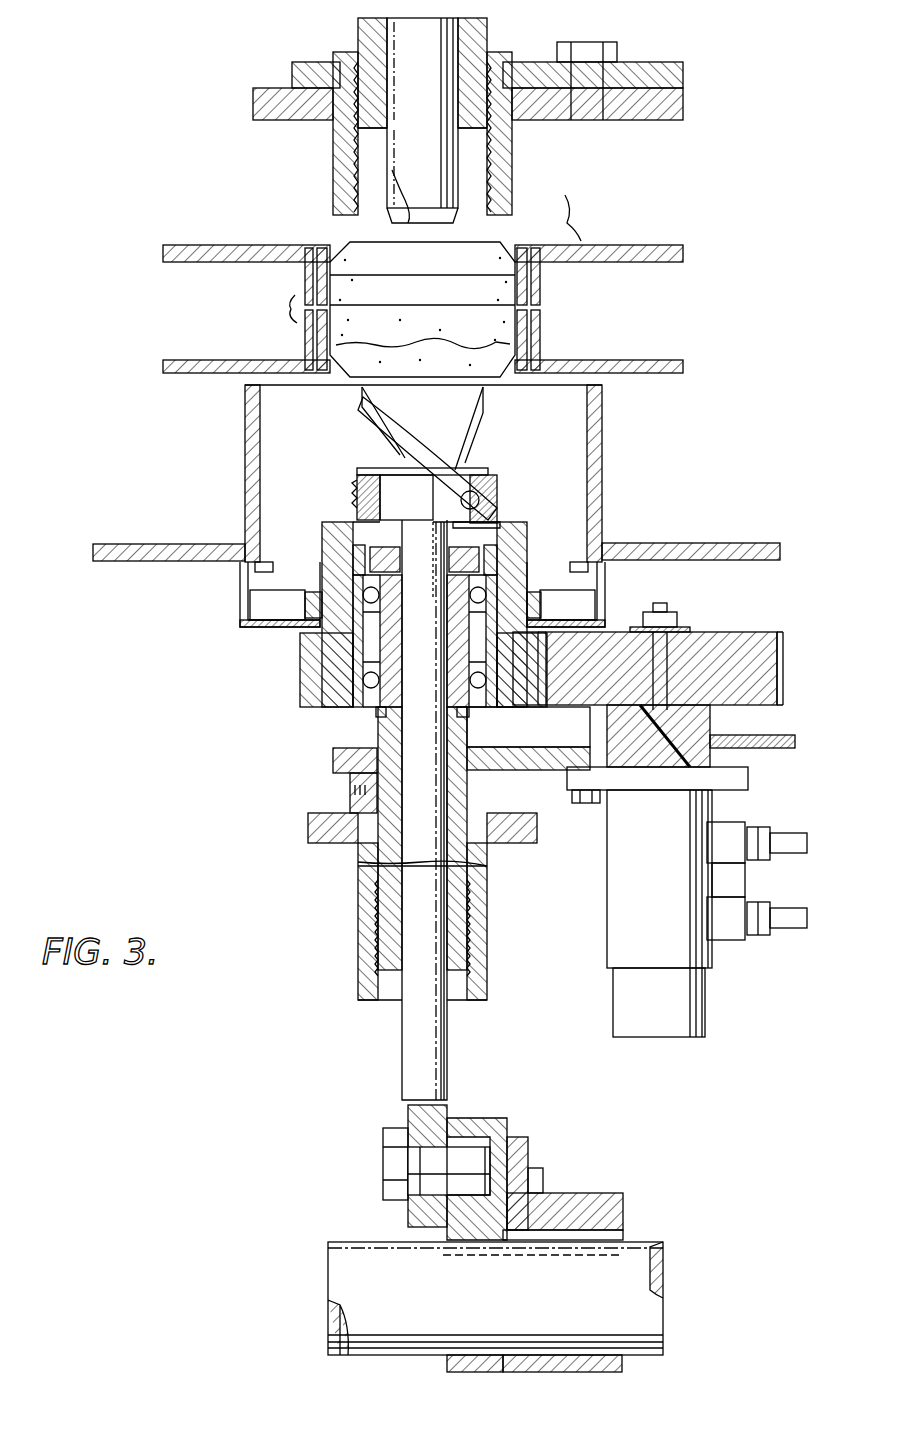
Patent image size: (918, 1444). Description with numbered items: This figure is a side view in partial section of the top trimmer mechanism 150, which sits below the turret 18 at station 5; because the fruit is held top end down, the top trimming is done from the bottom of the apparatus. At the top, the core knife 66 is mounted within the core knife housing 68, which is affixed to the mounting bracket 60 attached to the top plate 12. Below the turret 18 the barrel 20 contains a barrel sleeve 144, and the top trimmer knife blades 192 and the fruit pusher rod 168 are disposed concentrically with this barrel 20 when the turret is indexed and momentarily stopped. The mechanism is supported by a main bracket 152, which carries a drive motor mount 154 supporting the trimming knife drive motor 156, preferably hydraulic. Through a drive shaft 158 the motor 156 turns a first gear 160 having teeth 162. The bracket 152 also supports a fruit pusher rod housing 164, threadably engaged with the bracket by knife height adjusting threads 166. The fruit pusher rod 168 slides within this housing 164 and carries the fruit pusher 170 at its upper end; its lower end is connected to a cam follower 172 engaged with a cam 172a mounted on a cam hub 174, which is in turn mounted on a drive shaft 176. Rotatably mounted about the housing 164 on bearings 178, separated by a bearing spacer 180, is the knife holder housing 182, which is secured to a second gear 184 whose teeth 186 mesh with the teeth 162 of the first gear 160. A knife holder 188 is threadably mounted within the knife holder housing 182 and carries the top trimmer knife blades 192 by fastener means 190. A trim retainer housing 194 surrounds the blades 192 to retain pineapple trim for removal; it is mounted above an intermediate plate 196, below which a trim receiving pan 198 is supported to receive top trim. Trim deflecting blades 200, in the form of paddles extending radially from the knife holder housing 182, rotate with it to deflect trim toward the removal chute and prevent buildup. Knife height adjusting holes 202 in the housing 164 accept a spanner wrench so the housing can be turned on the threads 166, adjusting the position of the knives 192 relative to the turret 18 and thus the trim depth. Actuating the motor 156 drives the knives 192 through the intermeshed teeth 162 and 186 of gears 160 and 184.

The station 5 is at (300, 236).
The top plate 12 is at (663, 104).
The turret 18 is at (655, 262).
The barrel 20 is at (525, 331).
The mounting bracket 60 is at (685, 70).
The core knife 66 is at (400, 34).
The core knife housing 68 is at (488, 22).
The barrel sleeve 144 is at (520, 293).
The top trimmer mechanism 150 is at (210, 735).
The main bracket 152 is at (486, 926).
The drive motor mount 154 is at (745, 769).
The trimming knife drive motor 156 is at (700, 963).
The drive shaft 158 is at (690, 642).
The first gear 160 is at (760, 633).
The teeth 162 is at (785, 667).
The fruit pusher rod housing 164 is at (462, 960).
The knife height adjusting threads 166 is at (378, 960).
The fruit pusher rod 168 is at (421, 1047).
The fruit pusher 170 is at (482, 470).
The cam follower 172 is at (390, 1177).
The cam 172a is at (494, 1119).
The cam hub 174 is at (580, 1198).
The drive shaft 176 is at (630, 1289).
The bearings 178 is at (372, 707).
The bearing spacer 180 is at (345, 644).
The knife holder housing 182 is at (525, 542).
The second gear 184 is at (345, 705).
The teeth 186 is at (300, 690).
The knife holder 188 is at (500, 522).
The fastener means 190 is at (497, 492).
The top trimmer knife blades 192 is at (402, 435).
The trim retainer housing 194 is at (247, 436).
The intermediate plate 196 is at (106, 548).
The trim receiving pan 198 is at (590, 586).
The trim deflecting blades 200 is at (578, 605).
The knife height adjusting holes 202 is at (378, 720).